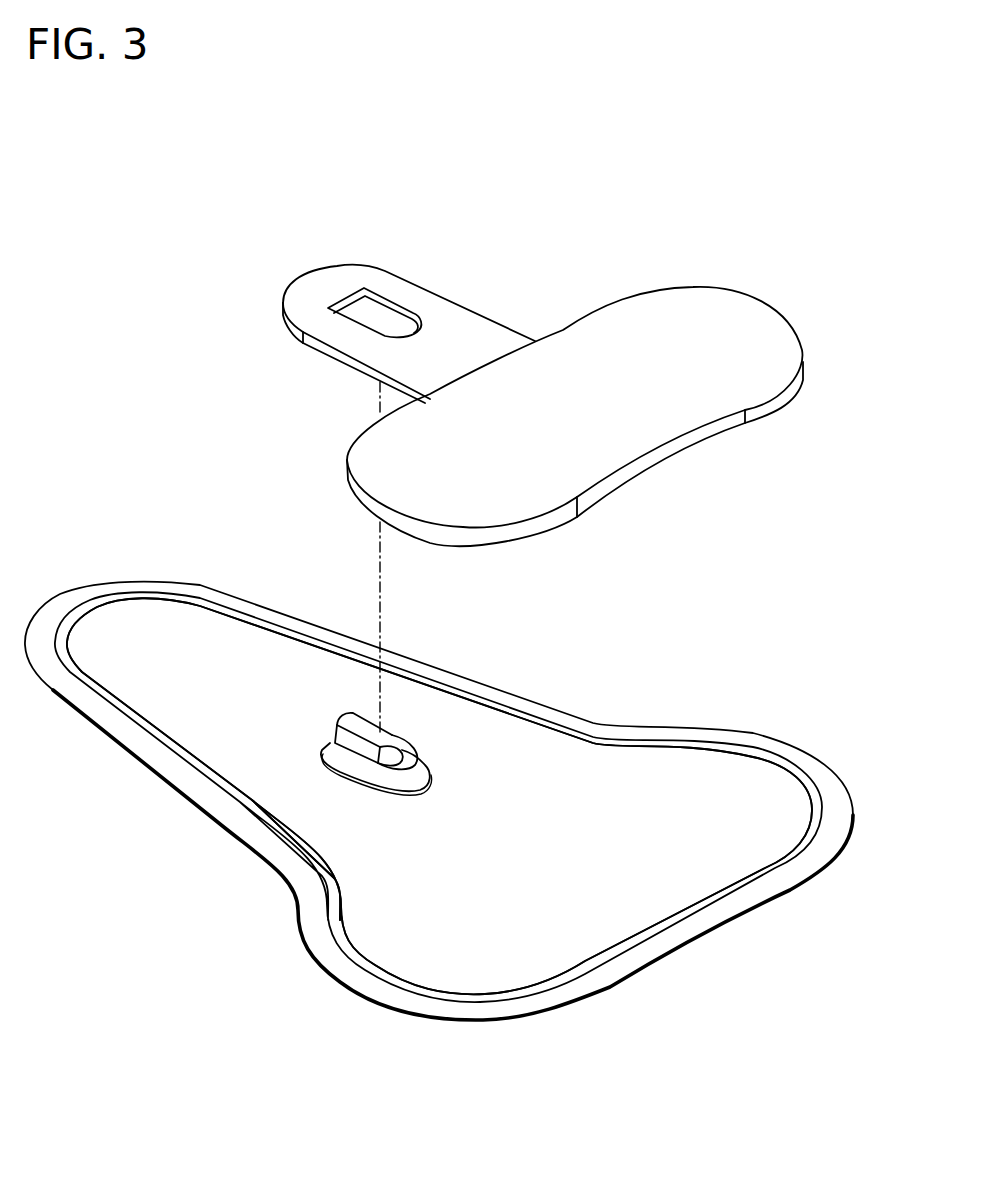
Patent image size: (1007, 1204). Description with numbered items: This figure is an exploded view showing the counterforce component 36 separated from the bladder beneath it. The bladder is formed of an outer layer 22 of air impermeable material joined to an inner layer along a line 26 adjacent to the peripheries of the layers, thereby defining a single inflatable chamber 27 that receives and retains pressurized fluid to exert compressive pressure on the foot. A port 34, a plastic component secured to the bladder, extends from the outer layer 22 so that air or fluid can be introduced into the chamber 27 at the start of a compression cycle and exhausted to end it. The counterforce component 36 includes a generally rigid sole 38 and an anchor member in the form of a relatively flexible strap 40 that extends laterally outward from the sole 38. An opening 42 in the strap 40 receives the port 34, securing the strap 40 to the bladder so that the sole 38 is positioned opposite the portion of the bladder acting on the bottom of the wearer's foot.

The outer layer 22 is at (613, 967).
The line 26 is at (228, 613).
The inflatable chamber 27 is at (123, 640).
The port 34 is at (394, 736).
The counterforce component 36 is at (745, 283).
The sole 38 is at (766, 406).
The strap 40 is at (475, 310).
The opening 42 is at (367, 317).